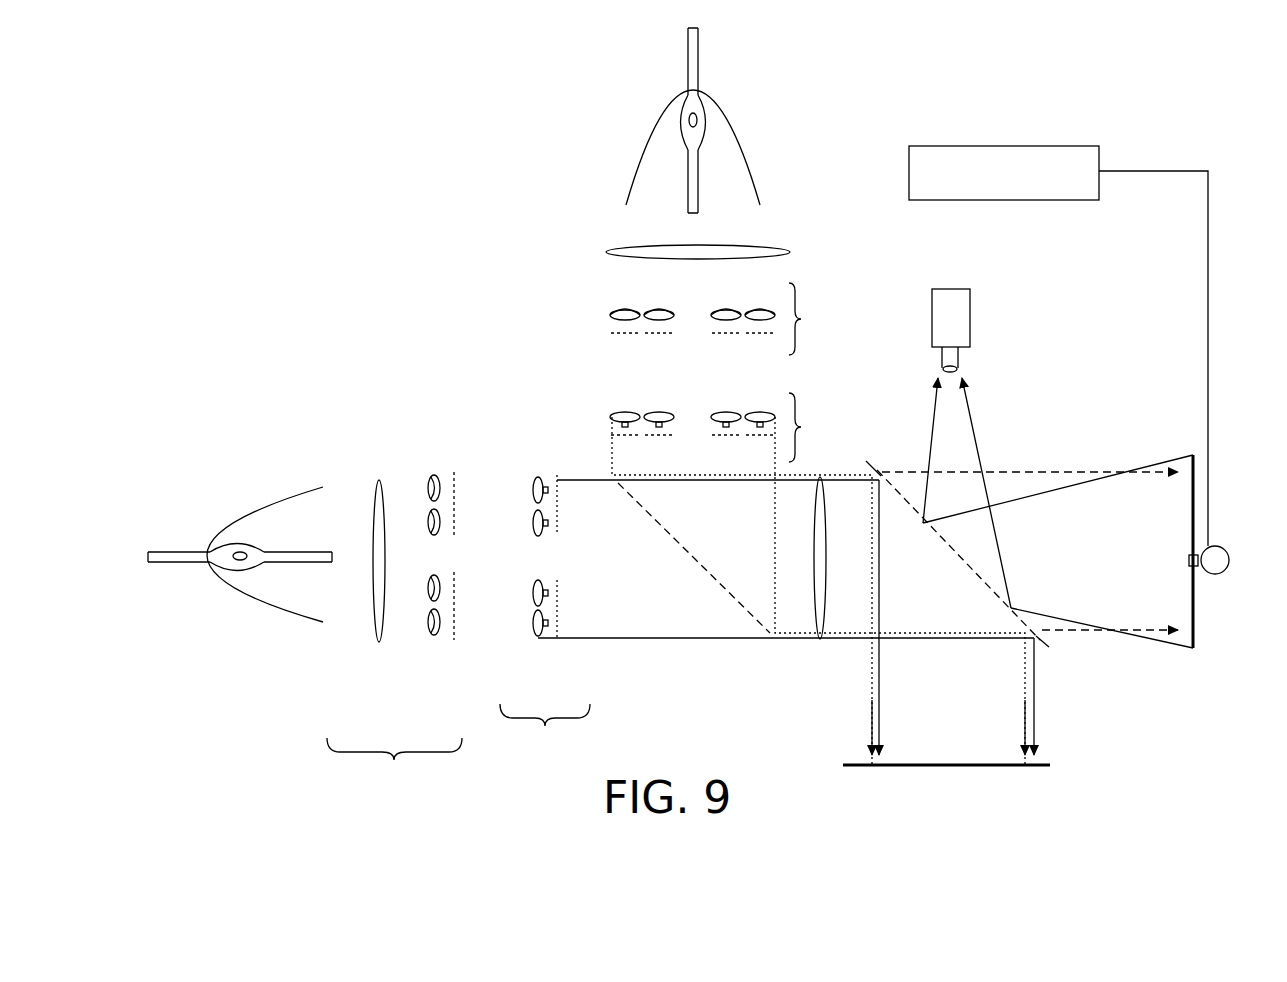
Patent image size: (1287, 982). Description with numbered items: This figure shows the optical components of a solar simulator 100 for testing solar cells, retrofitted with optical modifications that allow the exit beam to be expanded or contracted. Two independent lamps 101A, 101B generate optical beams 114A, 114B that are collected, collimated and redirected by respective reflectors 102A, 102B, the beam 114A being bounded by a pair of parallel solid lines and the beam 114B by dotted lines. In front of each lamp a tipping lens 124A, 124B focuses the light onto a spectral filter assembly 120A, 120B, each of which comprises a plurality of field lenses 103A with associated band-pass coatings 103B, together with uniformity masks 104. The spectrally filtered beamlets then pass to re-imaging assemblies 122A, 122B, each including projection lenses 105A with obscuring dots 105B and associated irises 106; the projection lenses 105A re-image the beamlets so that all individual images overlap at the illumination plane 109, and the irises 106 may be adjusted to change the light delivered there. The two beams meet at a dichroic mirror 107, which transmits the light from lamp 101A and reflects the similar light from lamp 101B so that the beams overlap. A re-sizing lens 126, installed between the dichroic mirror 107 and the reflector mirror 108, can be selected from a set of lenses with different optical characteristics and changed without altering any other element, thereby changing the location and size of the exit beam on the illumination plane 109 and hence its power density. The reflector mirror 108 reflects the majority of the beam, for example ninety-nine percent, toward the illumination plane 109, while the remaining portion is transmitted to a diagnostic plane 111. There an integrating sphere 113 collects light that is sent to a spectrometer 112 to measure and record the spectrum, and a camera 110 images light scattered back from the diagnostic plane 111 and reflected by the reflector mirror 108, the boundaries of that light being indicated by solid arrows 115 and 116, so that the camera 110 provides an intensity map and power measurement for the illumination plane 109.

The solar simulator 100 is at (337, 190).
The lamp 101A is at (237, 530).
The lamp 101B is at (683, 135).
The reflector 102A is at (240, 607).
The reflector 102B is at (742, 118).
The field lens 103A is at (604, 318).
The band-pass coating 103B is at (758, 298).
The uniformity mask 104 is at (617, 340).
The projection lens 105A is at (538, 640).
The obscuring dot 105B is at (548, 477).
The iris mechanism 106 is at (560, 597).
The dichroic mirror 107 is at (647, 508).
The reflector mirror 108 is at (890, 478).
The illumination plane 109 is at (948, 768).
The camera 110 is at (975, 313).
The diagnostic plane 111 is at (1188, 608).
The spectrometer 112 is at (1004, 145).
The integrating sphere 113 is at (1198, 567).
The optical beam 114A is at (588, 482).
The optical beam 114B is at (848, 483).
The solid arrow 115 is at (1080, 482).
The solid arrow 116 is at (1078, 633).
The spectral filter assembly 120A is at (394, 767).
The spectral filter assembly 120B is at (609, 493).
The re-imaging assembly 122A is at (545, 731).
The re-imaging assembly 122B is at (817, 579).
The tipping lens 124A is at (378, 485).
The tipping lens 124B is at (640, 247).
The re-sizing lens 126 is at (815, 620).